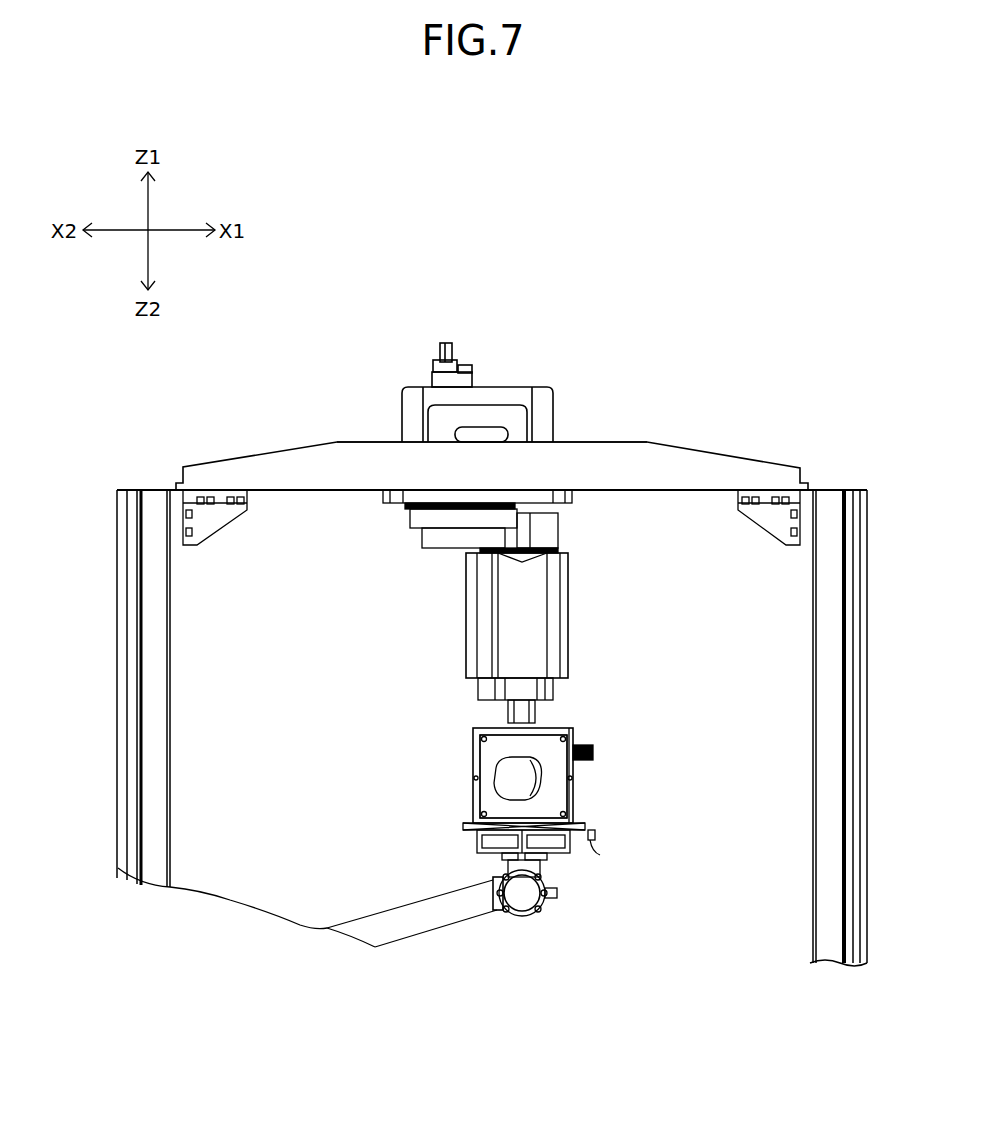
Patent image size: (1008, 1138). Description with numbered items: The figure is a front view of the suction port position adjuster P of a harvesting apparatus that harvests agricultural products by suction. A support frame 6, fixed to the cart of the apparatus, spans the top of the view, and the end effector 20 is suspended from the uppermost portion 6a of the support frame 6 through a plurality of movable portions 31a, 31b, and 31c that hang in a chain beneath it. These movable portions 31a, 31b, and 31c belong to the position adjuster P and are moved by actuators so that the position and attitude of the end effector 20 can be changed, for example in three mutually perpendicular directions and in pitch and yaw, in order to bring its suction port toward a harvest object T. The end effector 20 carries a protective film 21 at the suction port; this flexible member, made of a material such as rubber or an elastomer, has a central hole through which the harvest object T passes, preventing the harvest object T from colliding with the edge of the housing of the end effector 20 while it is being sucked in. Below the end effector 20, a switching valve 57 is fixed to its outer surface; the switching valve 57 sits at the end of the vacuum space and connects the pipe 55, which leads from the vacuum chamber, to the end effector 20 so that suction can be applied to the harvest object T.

The support frame 6 is at (725, 440).
The uppermost portion 6a is at (609, 446).
The movable portion 31a is at (545, 546).
The movable portion 31b is at (535, 600).
The movable portion 31c is at (556, 690).
The suction port position adjuster P is at (446, 588).
The end effector 20 is at (595, 813).
The protective film 21 is at (490, 756).
The harvest object T is at (508, 790).
The pipe 55 is at (395, 917).
The switching valve 57 is at (555, 840).